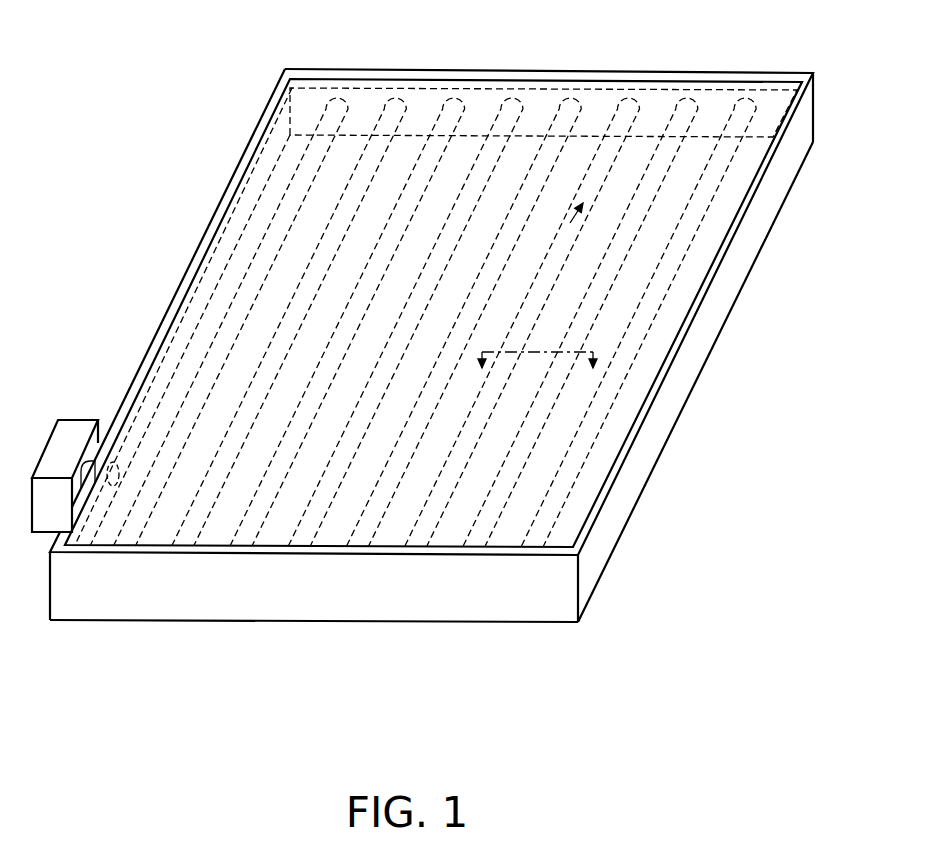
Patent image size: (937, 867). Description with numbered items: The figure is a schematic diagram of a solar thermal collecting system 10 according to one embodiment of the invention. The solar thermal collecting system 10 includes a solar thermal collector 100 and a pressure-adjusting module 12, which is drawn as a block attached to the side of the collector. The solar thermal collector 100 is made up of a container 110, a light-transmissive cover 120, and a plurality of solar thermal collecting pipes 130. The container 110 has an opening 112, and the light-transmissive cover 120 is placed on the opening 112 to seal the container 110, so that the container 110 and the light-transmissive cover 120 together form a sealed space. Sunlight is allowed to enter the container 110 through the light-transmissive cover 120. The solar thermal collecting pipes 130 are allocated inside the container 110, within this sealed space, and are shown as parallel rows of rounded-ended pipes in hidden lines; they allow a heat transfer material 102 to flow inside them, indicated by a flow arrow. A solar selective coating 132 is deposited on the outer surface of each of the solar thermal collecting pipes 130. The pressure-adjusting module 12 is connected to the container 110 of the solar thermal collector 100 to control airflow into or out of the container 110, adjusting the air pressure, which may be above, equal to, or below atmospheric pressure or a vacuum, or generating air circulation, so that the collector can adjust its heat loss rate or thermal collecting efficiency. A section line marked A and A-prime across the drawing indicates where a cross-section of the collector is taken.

The solar thermal collecting system 10 is at (699, 682).
The pressure-adjusting module 12 is at (80, 428).
The solar thermal collector 100 is at (712, 428).
The heat transfer material 102 is at (567, 230).
The container 110 is at (703, 338).
The opening 112 is at (700, 283).
The light-transmissive cover 120 is at (769, 121).
The solar thermal collecting pipes 130 is at (628, 105).
The solar selective coating 132 is at (618, 110).